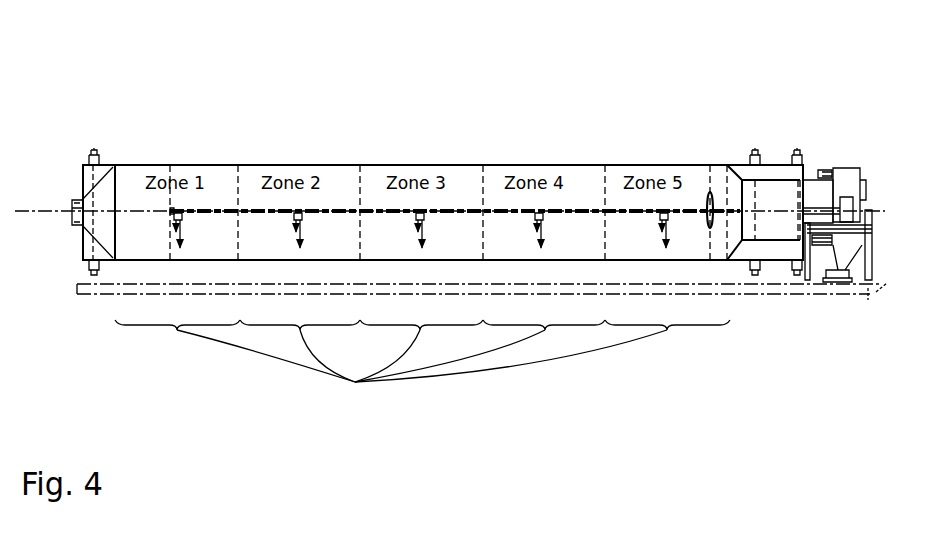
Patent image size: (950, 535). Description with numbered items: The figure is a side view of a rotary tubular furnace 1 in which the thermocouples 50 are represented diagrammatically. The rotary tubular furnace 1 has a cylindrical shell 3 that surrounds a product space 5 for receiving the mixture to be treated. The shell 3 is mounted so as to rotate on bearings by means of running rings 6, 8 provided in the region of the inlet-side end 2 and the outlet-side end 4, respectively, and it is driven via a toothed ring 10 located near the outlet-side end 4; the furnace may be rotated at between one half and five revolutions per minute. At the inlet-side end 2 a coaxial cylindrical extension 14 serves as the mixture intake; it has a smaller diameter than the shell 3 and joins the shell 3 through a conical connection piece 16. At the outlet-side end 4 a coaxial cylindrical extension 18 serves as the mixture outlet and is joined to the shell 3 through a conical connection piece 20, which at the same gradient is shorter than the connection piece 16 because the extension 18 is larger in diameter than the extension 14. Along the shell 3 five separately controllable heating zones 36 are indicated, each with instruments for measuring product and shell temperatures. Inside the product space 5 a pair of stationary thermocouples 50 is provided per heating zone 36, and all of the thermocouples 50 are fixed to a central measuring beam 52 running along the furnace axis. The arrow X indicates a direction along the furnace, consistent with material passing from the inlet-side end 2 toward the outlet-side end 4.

The rotary tubular furnace 1 is at (500, 121).
The inlet-side end 2 is at (86, 178).
The cylindrical shell 3 is at (410, 164).
The outlet-side end 4 is at (808, 175).
The product space 5 is at (254, 180).
The running ring 6 is at (103, 267).
The running ring 8 is at (752, 268).
The toothed ring 10 is at (795, 268).
The coaxial cylindrical extension 14 is at (80, 180).
The conical connection piece 16 is at (77, 231).
The coaxial cylindrical extension 18 is at (778, 172).
The conical connection piece 20 is at (742, 163).
The heating zone 36 is at (422, 368).
The thermocouple 50 is at (190, 227).
The central measuring beam 52 is at (370, 208).
The conveying direction X is at (159, 221).